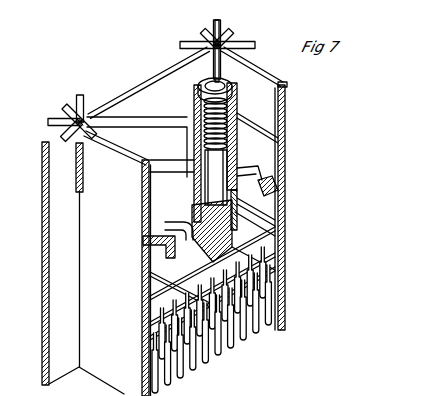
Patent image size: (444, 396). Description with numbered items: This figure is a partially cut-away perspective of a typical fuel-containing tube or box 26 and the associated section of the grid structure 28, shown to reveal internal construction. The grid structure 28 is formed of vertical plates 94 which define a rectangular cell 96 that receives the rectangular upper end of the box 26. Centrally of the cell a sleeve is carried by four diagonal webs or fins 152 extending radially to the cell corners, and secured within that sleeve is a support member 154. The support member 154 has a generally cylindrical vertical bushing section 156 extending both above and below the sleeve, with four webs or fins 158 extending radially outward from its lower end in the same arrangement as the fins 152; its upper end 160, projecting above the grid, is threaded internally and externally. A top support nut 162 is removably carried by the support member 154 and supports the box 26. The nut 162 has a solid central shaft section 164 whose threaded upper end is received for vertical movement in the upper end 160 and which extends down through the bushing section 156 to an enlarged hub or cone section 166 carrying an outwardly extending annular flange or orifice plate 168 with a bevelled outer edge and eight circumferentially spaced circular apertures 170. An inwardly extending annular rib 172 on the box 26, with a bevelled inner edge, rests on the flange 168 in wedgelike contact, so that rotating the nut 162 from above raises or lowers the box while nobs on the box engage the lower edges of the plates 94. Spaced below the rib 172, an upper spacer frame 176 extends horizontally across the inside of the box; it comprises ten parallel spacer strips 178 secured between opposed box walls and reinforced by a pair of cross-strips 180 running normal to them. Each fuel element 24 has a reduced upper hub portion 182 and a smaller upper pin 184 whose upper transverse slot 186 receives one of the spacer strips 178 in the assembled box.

The fuel element 24 is at (258, 326).
The fuel-containing tube or box 26 is at (266, 214).
The grid structure 28 is at (263, 64).
The vertical plates 94 is at (157, 78).
The rectangular cell 96 is at (250, 77).
The diagonal webs or fins 152 is at (77, 224).
The support member 154 is at (195, 76).
The bushing section 156 is at (160, 236).
The webs or fins 158 is at (150, 204).
The upper end of the bushing section 160 is at (135, 133).
The top support nut 162 is at (217, 41).
The shaft section 164 is at (222, 176).
The hub or cone section 166 is at (220, 229).
The flange or orifice plate 168 is at (277, 198).
The circular apertures or openings 170 is at (150, 270).
The annular rib or flange 172 is at (246, 166).
The upper spacer frame 176 is at (281, 260).
The spacer strips 178 is at (268, 270).
The cross-strips 180 is at (150, 287).
The upper hub portion 182 is at (160, 370).
The upper pin or extension 184 is at (160, 346).
The upper transverse slot 186 is at (163, 340).